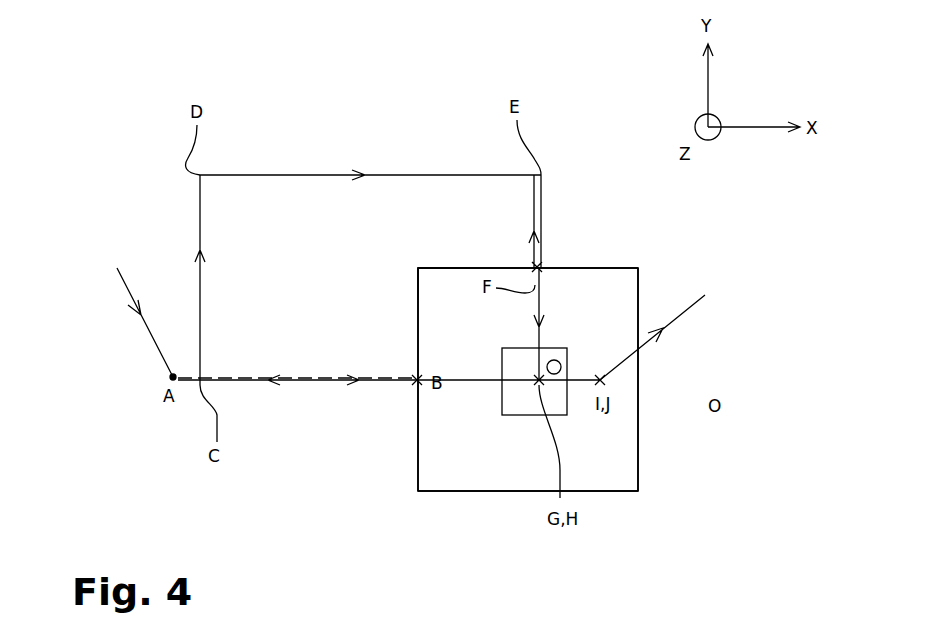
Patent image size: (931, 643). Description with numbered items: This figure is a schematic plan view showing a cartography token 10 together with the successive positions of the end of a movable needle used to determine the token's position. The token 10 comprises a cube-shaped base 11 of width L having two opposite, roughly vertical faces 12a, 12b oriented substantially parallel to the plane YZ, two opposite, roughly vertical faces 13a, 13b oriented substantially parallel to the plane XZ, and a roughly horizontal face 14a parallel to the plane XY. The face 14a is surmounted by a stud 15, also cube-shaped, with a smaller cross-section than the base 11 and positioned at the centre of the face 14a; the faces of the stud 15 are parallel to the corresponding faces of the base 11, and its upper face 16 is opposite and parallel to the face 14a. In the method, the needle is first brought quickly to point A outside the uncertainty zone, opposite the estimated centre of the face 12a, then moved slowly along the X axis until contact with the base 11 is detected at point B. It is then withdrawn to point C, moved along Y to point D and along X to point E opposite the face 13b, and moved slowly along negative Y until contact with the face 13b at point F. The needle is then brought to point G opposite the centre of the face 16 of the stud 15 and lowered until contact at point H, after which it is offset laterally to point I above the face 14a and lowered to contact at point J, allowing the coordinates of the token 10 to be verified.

The cartography token 10 is at (670, 503).
The base 11 is at (607, 292).
The face 12a is at (418, 438).
The face 12b is at (638, 448).
The face 13a is at (470, 491).
The face 13b is at (470, 268).
The face 14a is at (438, 305).
The stud 15 is at (552, 356).
The face 16 is at (518, 400).